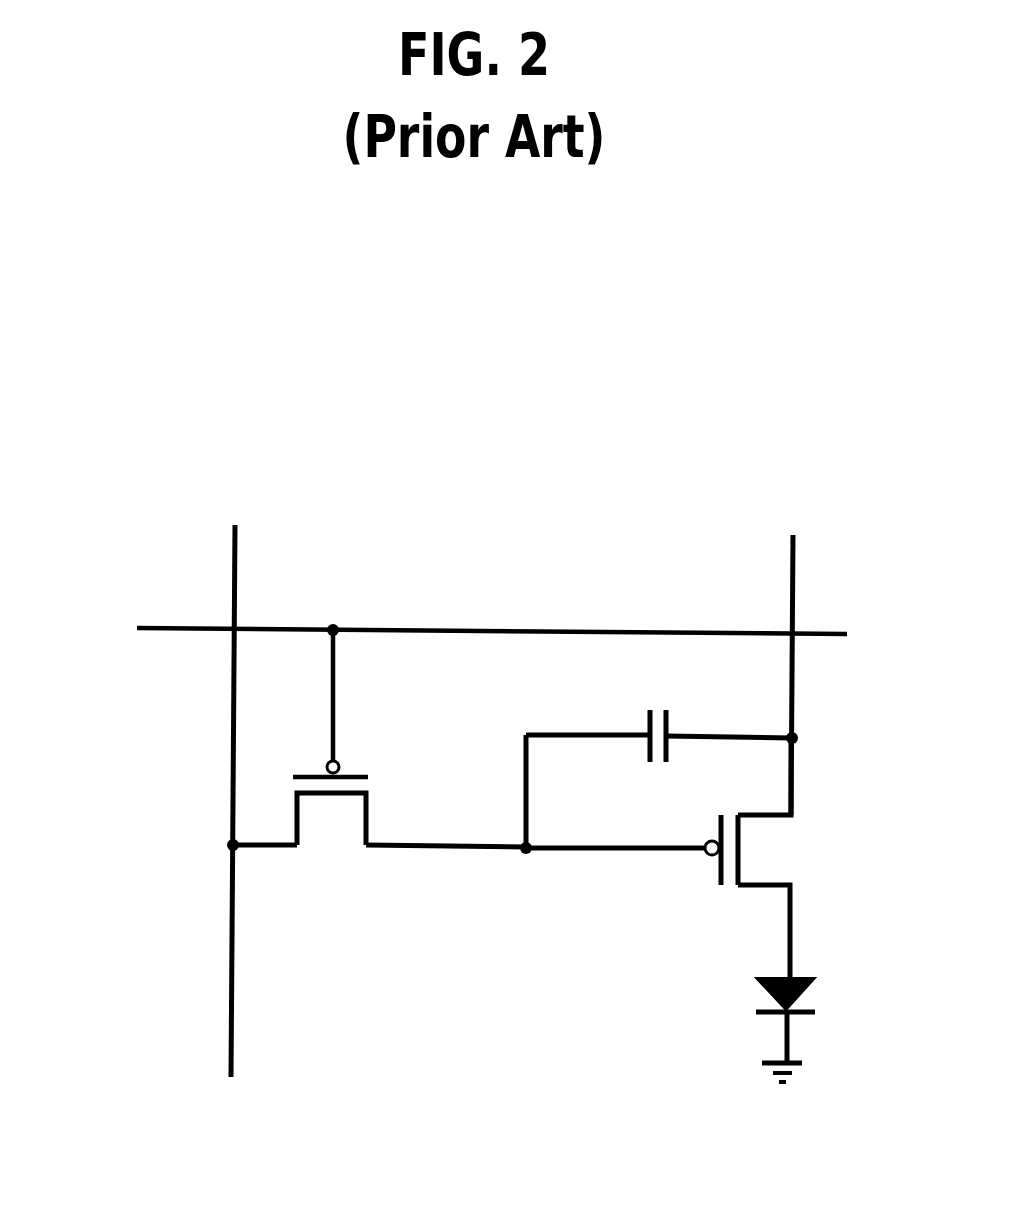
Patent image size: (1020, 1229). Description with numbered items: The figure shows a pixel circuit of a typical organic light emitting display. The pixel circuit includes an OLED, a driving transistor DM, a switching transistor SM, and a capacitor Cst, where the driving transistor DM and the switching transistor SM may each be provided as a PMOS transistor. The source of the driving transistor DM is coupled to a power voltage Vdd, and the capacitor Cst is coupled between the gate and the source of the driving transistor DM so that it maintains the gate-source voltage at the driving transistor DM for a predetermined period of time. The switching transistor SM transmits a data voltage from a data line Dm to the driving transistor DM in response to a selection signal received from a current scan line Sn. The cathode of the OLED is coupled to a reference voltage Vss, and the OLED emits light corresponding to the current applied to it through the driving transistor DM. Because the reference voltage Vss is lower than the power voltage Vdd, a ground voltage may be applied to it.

The data line Dm is at (223, 773).
The current scan line Sn is at (451, 625).
The power voltage Vdd is at (789, 651).
The switching transistor SM is at (379, 760).
The capacitor Cst is at (656, 782).
The driving transistor DM is at (688, 858).
The organic light emitting diode OLED is at (727, 1018).
The reference voltage Vss is at (783, 1094).